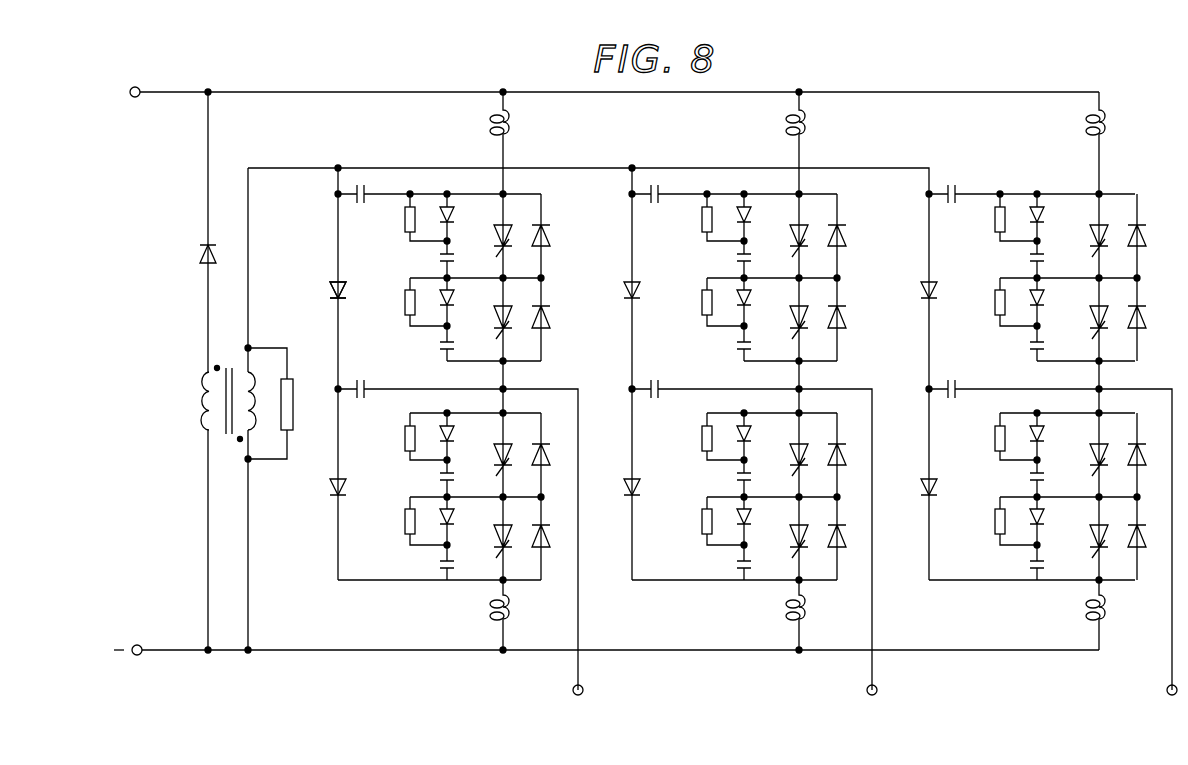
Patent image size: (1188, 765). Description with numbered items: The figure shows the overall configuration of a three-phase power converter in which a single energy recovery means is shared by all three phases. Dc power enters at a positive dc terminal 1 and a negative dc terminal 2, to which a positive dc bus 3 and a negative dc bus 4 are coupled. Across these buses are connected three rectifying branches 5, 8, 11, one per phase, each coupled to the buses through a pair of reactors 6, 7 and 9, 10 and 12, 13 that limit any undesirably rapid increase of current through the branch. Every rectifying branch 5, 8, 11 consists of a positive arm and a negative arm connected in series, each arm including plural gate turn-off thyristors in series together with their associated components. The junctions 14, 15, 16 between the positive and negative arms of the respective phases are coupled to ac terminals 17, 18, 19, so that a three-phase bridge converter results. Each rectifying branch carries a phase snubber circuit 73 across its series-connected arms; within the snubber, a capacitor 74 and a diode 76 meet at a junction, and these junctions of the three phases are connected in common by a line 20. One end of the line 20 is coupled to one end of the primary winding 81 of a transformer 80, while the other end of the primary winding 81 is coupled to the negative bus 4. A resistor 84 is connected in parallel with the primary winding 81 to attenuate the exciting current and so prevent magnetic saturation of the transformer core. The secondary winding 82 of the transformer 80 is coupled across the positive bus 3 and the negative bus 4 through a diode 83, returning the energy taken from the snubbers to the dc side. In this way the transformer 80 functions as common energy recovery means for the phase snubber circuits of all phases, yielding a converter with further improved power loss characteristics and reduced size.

The positive dc terminal 1 is at (135, 87).
The negative dc terminal 2 is at (138, 645).
The positive dc bus 3 is at (268, 90).
The negative dc bus 4 is at (288, 652).
The rectifying branch 5 is at (435, 393).
The reactor 6 is at (510, 138).
The reactor 7 is at (510, 612).
The rectifying branch 8 is at (750, 393).
The reactor 9 is at (806, 138).
The reactor 10 is at (806, 612).
The rectifying branch 11 is at (1049, 393).
The reactor 12 is at (1106, 138).
The reactor 13 is at (1106, 612).
The junction 14 is at (508, 389).
The junction 15 is at (804, 389).
The junction 16 is at (1104, 389).
The ac terminal 17 is at (573, 688).
The ac terminal 18 is at (867, 688).
The ac terminal 19 is at (1167, 688).
The line 20 is at (386, 168).
The snubber circuit 73 is at (369, 530).
The capacitor 74 is at (358, 204).
The diode 76 is at (330, 290).
The transformer 80 is at (219, 434).
The primary winding 81 is at (254, 418).
The secondary winding 82 is at (200, 405).
The diode 83 is at (203, 254).
The resistor 84 is at (294, 400).